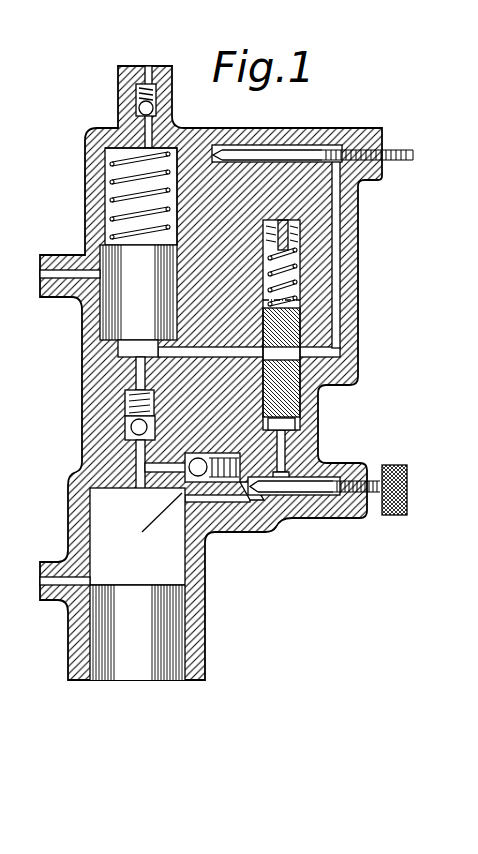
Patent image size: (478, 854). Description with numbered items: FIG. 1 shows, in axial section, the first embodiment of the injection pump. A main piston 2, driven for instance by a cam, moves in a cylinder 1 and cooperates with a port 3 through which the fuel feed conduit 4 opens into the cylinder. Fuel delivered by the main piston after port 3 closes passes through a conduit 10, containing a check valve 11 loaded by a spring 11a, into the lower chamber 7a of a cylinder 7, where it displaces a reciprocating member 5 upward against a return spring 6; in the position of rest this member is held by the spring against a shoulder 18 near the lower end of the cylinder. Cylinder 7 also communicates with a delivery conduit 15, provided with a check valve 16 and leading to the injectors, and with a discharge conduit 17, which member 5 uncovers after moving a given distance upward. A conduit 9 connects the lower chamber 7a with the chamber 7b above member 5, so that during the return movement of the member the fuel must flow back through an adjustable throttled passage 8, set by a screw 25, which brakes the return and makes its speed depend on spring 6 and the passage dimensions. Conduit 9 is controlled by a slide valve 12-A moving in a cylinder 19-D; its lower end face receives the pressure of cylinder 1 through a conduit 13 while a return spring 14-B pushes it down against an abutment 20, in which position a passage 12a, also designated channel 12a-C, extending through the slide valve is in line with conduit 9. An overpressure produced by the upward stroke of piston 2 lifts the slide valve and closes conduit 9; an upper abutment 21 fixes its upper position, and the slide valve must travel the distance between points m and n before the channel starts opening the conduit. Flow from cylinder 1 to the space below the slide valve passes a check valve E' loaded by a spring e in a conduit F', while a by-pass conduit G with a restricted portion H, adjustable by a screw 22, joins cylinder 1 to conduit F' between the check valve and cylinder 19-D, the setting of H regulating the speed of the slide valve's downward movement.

The cylinder 1 is at (186, 553).
The main piston 2 is at (165, 626).
The port 3 is at (92, 585).
The fuel feed conduit 4 is at (45, 580).
The reciprocating member 5 is at (112, 310).
The return spring 6 is at (112, 183).
The cylinder 7 is at (108, 205).
The lower chamber 7a is at (128, 347).
The upper chamber 7b is at (112, 170).
The throttled passage 8 is at (230, 142).
The conduit 9 is at (336, 190).
The conduit 10 is at (140, 473).
The check valve 11 is at (134, 425).
The spring 11a is at (126, 400).
The passage 12a is at (350, 292).
The slide valve 12-A is at (290, 405).
The channel 12a-C is at (325, 360).
The conduit 13 is at (283, 447).
The return spring 14-B is at (298, 286).
The delivery conduit 15 is at (146, 133).
The check valve 16 is at (141, 105).
The discharge conduit 17 is at (62, 270).
The shoulder 18 is at (148, 362).
The cylinder 19-D is at (302, 266).
The abutment 20 is at (298, 421).
The abutment 21 is at (283, 245).
The screw 22 is at (310, 490).
The screw 25 is at (307, 152).
The spring e is at (154, 522).
The check valve E' is at (153, 514).
The conduit F' is at (167, 528).
The by-pass conduit G is at (230, 503).
The restricted portion H is at (258, 492).
The point m is at (302, 300).
The point n is at (332, 348).